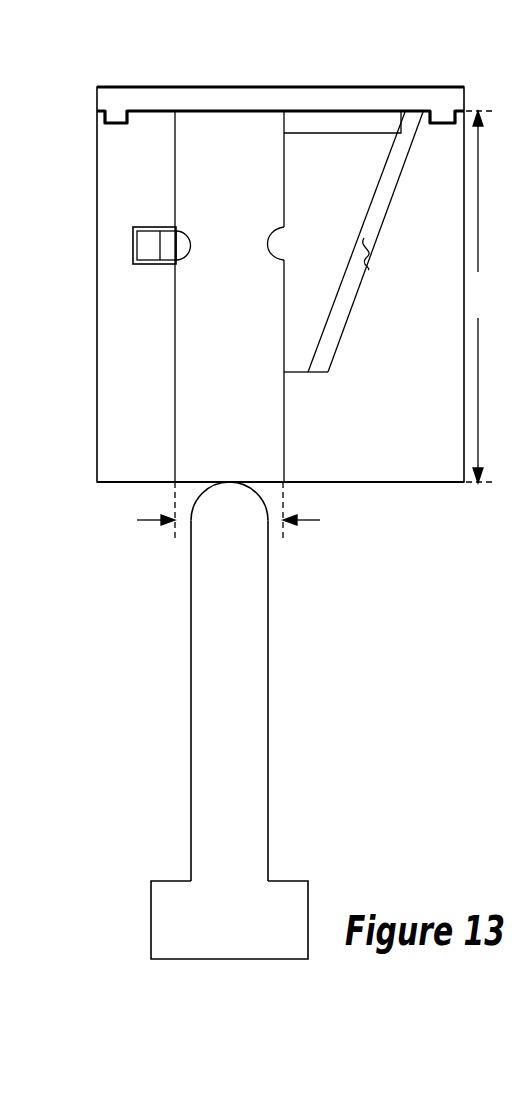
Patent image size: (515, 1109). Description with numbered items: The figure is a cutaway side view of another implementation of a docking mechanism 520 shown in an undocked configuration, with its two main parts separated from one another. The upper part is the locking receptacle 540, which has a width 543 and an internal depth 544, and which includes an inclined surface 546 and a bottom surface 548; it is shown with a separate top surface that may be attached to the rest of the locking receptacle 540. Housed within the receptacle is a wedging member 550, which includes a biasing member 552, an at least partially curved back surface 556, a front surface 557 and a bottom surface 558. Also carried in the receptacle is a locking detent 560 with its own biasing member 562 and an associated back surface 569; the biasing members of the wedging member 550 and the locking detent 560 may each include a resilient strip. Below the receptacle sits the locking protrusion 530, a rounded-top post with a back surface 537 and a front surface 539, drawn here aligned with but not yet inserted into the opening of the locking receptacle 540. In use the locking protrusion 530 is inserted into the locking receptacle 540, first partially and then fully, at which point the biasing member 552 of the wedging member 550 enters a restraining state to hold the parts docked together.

The docking mechanism 520 is at (113, 74).
The wedging member 550 is at (340, 176).
The biasing member 552 is at (358, 133).
The inclined surface 546 is at (372, 258).
The back surface 556 is at (364, 260).
The front surface 557 is at (287, 250).
The bottom surface 558 is at (296, 369).
The bottom surface 548 is at (305, 375).
The locking detent 560 is at (172, 228).
The biasing member 562 is at (138, 265).
The back surface 569 is at (194, 240).
The internal depth 544 is at (482, 297).
The locking receptacle 540 is at (122, 500).
The width 543 is at (305, 522).
The locking protrusion 530 is at (245, 711).
The front surface 539 is at (192, 648).
The back surface 537 is at (268, 762).